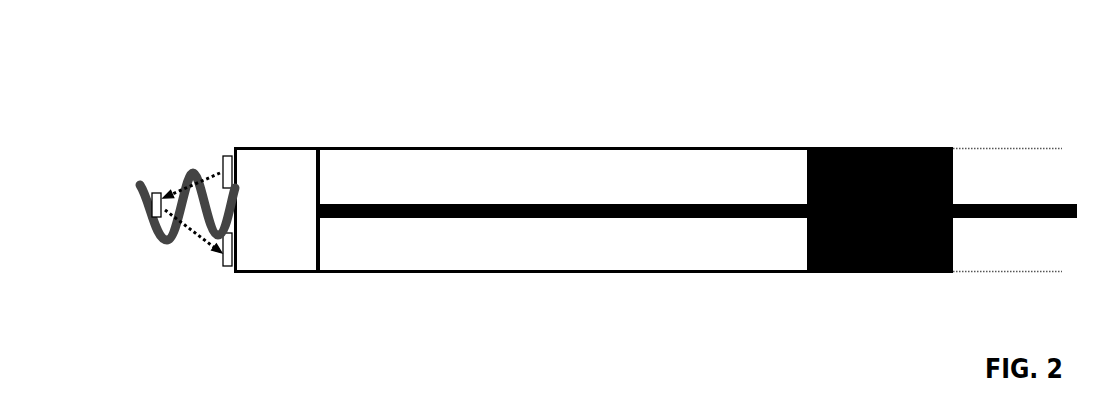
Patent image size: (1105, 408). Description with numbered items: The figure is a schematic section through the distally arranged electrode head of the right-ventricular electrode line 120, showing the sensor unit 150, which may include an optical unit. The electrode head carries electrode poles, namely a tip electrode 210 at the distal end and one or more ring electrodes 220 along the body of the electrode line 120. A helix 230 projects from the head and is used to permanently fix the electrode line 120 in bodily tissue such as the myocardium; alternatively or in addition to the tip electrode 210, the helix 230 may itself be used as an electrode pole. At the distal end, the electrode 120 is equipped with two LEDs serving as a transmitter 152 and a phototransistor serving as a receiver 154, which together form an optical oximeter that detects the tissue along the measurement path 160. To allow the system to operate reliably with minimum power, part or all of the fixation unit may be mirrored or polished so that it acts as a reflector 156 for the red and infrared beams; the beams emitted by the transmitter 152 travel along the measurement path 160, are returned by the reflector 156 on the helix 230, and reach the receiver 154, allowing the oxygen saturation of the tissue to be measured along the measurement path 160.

The right-ventricular electrode line 120 is at (722, 273).
The sensor unit 150 is at (162, 140).
The transmitter 152 is at (232, 153).
The receiver 154 is at (230, 268).
The reflector 156 is at (153, 205).
The measurement path 160 is at (180, 163).
The tip electrode 210 is at (273, 272).
The ring electrode 220 is at (880, 147).
The helix 230 is at (163, 243).